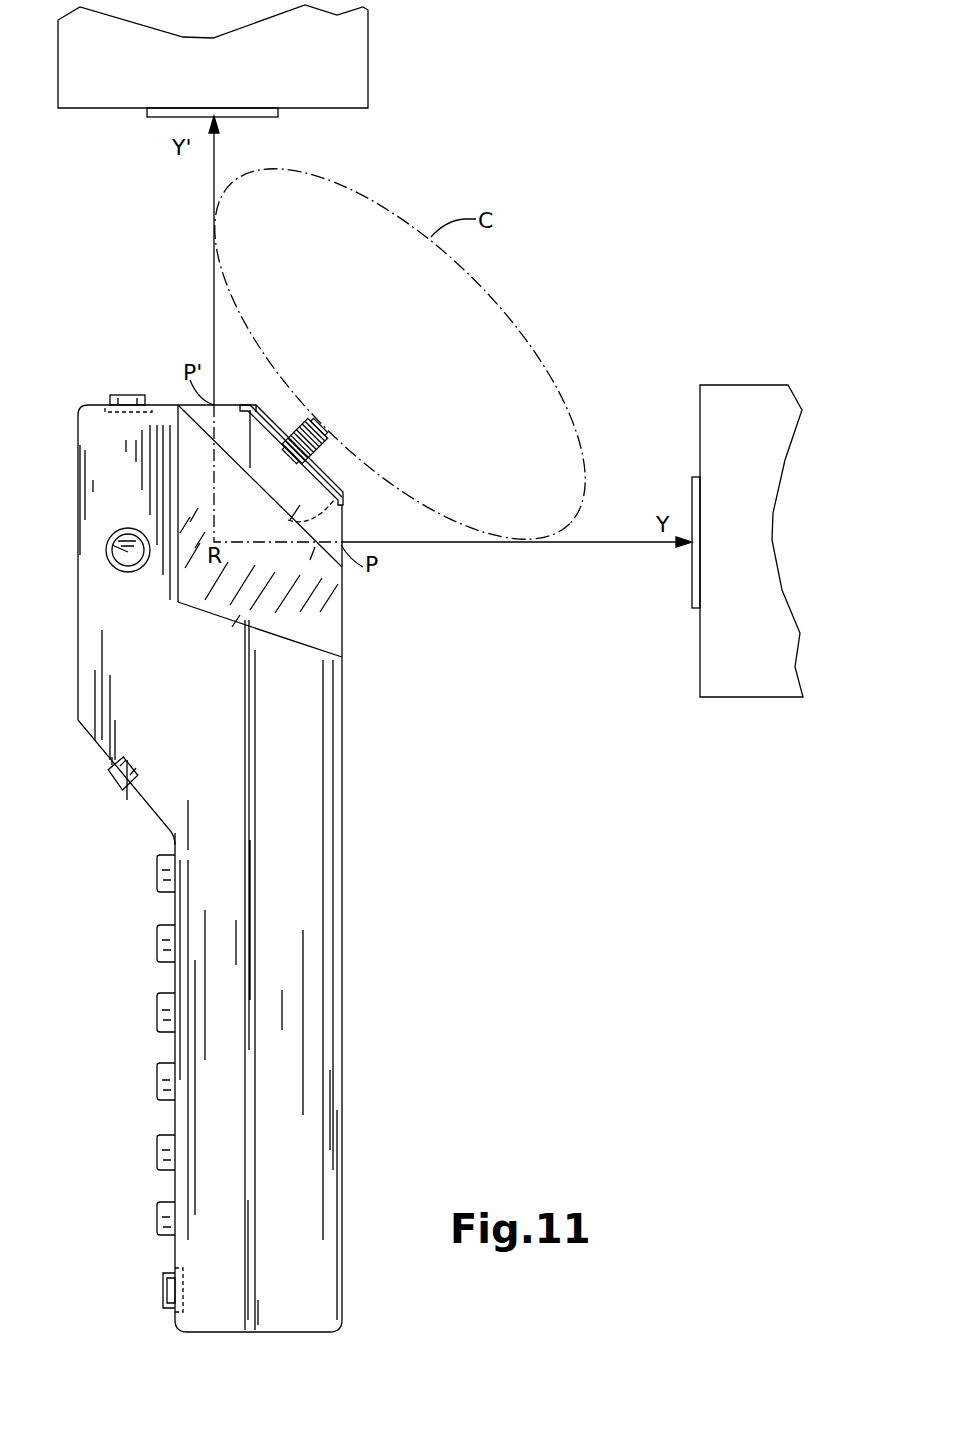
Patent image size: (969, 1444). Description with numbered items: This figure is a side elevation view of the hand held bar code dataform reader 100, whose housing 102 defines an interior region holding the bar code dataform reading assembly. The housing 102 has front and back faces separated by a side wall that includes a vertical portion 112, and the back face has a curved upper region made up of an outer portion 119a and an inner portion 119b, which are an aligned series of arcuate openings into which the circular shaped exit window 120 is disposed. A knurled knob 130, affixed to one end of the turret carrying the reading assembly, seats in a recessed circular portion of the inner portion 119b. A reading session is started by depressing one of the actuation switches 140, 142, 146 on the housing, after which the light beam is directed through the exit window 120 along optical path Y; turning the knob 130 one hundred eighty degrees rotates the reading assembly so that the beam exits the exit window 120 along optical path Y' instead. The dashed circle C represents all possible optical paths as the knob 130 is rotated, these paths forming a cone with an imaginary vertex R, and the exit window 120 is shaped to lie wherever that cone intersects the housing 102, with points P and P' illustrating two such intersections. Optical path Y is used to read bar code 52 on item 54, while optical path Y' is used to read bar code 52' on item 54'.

The item 54' is at (213, 56).
The bar code 52' is at (223, 131).
The item 54 is at (751, 541).
The bar code 52 is at (675, 563).
The hand held bar code dataform reader 100 is at (239, 841).
The housing 102 is at (358, 910).
The vertical portion of side wall 112 is at (217, 729).
The outer portion of upper region 119a is at (303, 598).
The inner portion of upper region 119b is at (343, 490).
The exit window 120 is at (310, 491).
The knurled knob 130 is at (301, 424).
The actuation switch 140 is at (130, 398).
The actuation switch 142 is at (118, 545).
The actuation switch 146 is at (108, 773).